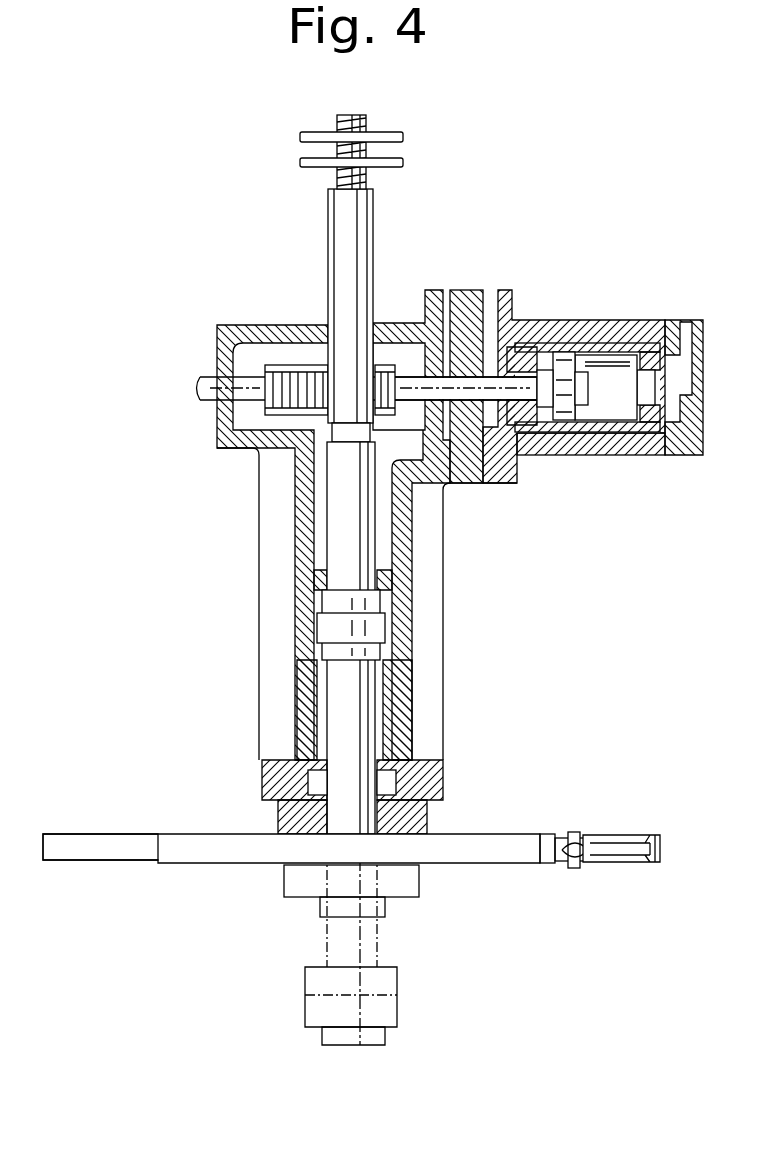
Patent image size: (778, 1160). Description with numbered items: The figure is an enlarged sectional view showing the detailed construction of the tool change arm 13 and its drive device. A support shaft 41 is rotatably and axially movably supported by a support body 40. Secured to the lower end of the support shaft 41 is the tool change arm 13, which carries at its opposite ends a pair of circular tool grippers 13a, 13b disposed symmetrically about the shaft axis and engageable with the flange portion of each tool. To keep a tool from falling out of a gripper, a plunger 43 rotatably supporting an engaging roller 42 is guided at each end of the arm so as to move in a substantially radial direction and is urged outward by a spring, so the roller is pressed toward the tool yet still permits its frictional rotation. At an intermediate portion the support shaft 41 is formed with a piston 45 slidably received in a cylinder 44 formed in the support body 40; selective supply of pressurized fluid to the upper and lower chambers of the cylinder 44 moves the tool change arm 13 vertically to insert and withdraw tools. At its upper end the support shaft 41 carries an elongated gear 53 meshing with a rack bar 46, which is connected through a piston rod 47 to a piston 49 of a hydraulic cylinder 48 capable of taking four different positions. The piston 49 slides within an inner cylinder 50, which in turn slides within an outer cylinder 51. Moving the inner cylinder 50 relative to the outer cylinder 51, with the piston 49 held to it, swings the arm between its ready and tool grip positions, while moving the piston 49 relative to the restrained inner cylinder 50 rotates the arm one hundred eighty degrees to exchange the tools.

The tool change arm 13 is at (232, 864).
The tool gripper 13a is at (628, 848).
The tool gripper 13b is at (100, 862).
The support body 40 is at (305, 523).
The support shaft 41 is at (372, 698).
The engaging roller 42 is at (575, 853).
The plunger 43 is at (547, 835).
The cylinder 44 is at (318, 698).
The piston 45 is at (378, 622).
The rack bar 46 is at (295, 365).
The piston rod 47 is at (497, 400).
The hydraulic cylinder 48 is at (660, 320).
The piston 49 is at (563, 352).
The inner cylinder 50 is at (603, 345).
The outer cylinder 51 is at (597, 440).
The elongated gear 53 is at (363, 252).